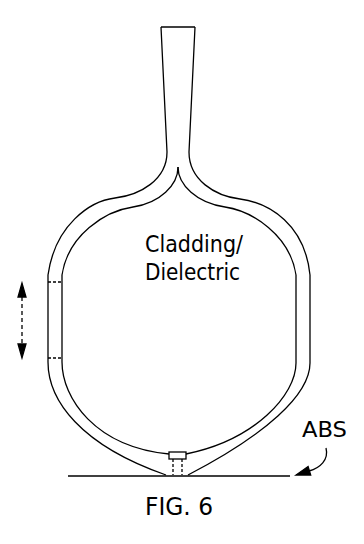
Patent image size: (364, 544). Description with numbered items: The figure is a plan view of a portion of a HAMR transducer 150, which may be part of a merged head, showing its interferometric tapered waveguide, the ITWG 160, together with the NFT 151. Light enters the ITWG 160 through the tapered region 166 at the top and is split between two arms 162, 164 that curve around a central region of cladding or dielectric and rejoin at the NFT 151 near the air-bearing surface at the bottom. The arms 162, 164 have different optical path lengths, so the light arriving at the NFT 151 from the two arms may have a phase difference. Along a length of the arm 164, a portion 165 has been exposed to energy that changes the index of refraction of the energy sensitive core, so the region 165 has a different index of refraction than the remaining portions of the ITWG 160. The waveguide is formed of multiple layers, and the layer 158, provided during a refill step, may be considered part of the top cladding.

The HAMR transducer 150 is at (200, 22).
The tapered region 166 is at (165, 88).
The arm 164 is at (113, 198).
The arm 162 is at (255, 203).
The ITWG 160 is at (238, 149).
The portion of the arm 165 is at (83, 325).
The layer 158 is at (124, 381).
The NFT 151 is at (178, 452).